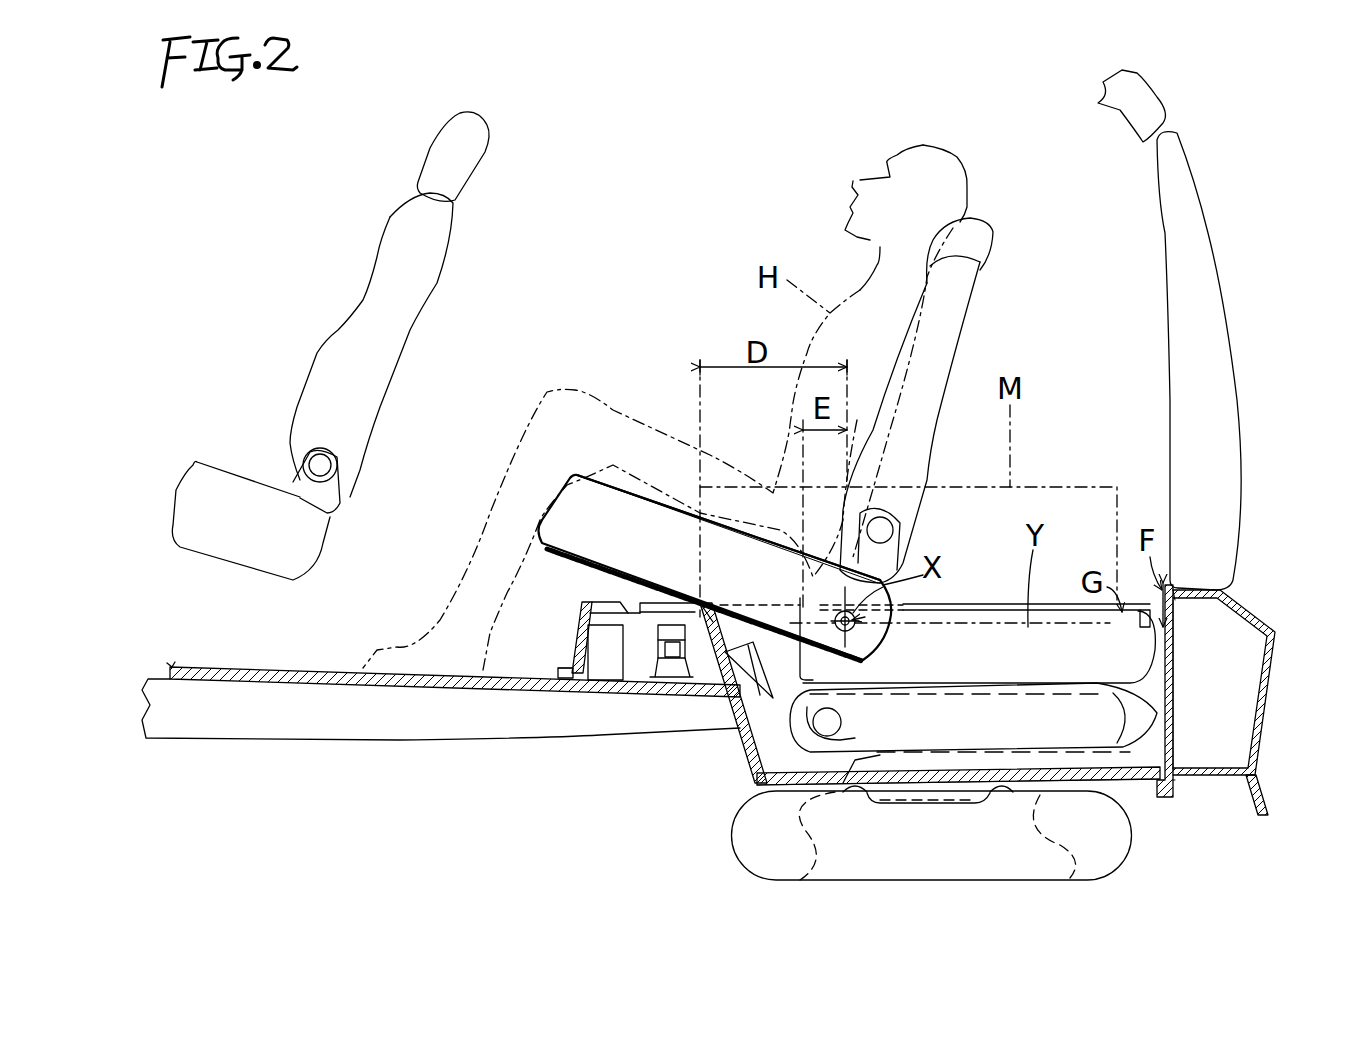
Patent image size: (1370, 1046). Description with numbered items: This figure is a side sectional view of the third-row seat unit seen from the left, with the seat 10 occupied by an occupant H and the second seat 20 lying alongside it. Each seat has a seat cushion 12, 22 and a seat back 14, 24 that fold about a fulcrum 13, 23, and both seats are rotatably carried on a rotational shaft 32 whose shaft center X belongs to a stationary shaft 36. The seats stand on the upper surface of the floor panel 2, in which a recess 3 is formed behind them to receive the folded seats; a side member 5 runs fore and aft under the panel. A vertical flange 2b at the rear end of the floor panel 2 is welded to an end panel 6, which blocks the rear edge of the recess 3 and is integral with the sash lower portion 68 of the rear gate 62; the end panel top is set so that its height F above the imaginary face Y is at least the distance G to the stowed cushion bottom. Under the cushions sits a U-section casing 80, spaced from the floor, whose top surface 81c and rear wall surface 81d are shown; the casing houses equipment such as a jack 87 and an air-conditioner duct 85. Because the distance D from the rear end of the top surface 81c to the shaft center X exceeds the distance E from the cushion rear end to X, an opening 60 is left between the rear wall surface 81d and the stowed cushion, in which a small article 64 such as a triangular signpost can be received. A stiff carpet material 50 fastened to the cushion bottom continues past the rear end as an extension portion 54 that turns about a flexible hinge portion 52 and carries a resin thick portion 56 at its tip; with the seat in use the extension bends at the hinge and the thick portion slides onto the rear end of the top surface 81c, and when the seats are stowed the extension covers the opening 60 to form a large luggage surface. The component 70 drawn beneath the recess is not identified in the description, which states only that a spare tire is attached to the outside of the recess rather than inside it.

The floor panel 2 is at (215, 666).
The vertical flange 2b is at (1150, 793).
The recess 3 is at (758, 775).
The side member 5 is at (277, 720).
The end panel 6 is at (1173, 743).
The seat 10 is at (560, 491).
The seat cushion 12 is at (603, 495).
The fulcrum 13 is at (883, 530).
The seat back 14 is at (957, 308).
The seat 20 is at (1175, 643).
The seat cushion 22 is at (1137, 653).
The fulcrum 23 is at (843, 765).
The seat back 24 is at (1100, 717).
The rotational shaft 32 is at (923, 607).
The stationary shaft 36 is at (877, 637).
The carpet material 50 is at (563, 549).
The hinge portion 52 is at (878, 715).
The extension portion 54 is at (690, 605).
The thick portion 56 is at (635, 640).
The opening 60 is at (690, 645).
The rear gate 62 is at (1220, 358).
The small article 64 is at (753, 773).
The sash lower portion 68 is at (1270, 700).
The storage bag 70 is at (973, 850).
The casing 80 is at (575, 620).
The top surface 81c is at (632, 598).
The rear wall surface 81d is at (727, 672).
The air-conditioner duct 85 is at (593, 687).
The jack 87 is at (668, 657).